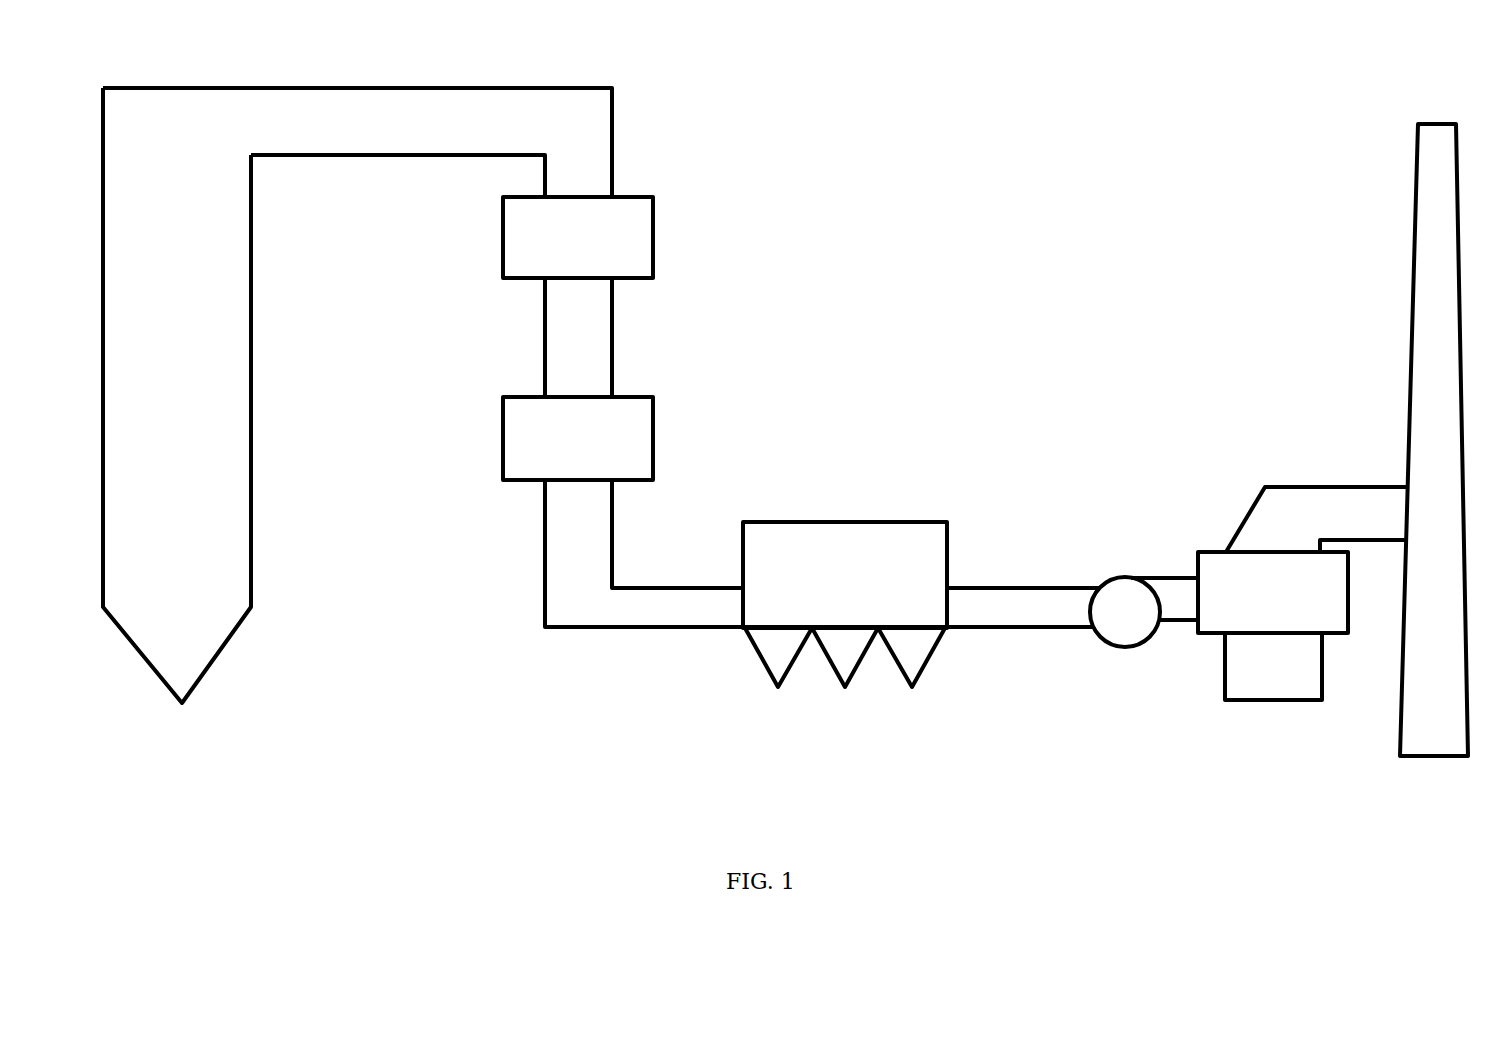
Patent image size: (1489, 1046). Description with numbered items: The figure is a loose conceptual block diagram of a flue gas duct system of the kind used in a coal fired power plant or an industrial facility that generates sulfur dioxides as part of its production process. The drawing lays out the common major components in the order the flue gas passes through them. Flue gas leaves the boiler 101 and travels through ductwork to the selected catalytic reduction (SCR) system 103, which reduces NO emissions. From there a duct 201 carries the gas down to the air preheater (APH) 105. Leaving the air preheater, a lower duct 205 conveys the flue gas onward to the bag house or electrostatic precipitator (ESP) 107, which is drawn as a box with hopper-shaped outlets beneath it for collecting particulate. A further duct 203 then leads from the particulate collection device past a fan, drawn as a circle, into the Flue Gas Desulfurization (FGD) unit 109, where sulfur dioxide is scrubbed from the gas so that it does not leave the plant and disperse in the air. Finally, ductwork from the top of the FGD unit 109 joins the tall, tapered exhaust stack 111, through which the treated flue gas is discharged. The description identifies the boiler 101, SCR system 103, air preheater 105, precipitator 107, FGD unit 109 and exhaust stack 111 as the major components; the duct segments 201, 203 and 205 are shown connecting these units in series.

The boiler 101 is at (217, 87).
The selected catalytic reduction (SCR) system 103 is at (655, 245).
The air preheater (APH) 105 is at (503, 439).
The bag house or electrostatic precipitator (ESP) 107 is at (845, 522).
The Flue Gas Desulfurization (FGD) unit 109 is at (1266, 700).
The exhaust stack 111 is at (1400, 316).
The duct between SCR and air preheater 201 is at (545, 336).
The duct between particulate collection and fan 203 is at (998, 629).
The duct between air preheater and particulate collection 205 is at (591, 637).